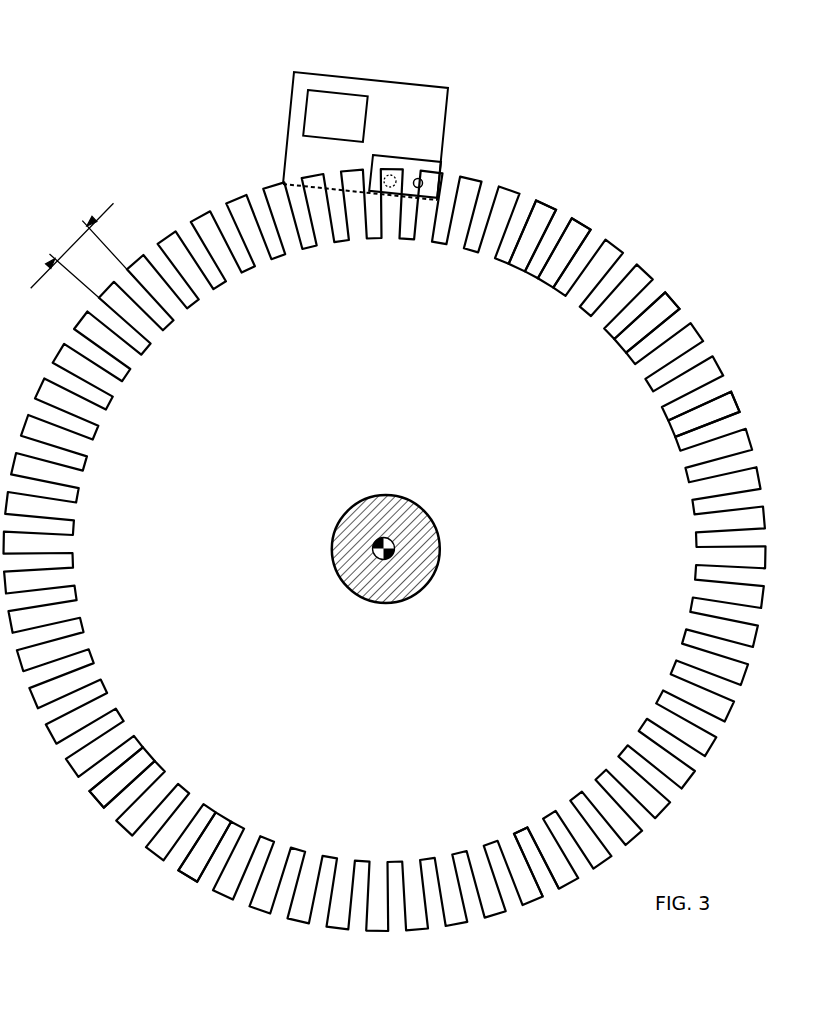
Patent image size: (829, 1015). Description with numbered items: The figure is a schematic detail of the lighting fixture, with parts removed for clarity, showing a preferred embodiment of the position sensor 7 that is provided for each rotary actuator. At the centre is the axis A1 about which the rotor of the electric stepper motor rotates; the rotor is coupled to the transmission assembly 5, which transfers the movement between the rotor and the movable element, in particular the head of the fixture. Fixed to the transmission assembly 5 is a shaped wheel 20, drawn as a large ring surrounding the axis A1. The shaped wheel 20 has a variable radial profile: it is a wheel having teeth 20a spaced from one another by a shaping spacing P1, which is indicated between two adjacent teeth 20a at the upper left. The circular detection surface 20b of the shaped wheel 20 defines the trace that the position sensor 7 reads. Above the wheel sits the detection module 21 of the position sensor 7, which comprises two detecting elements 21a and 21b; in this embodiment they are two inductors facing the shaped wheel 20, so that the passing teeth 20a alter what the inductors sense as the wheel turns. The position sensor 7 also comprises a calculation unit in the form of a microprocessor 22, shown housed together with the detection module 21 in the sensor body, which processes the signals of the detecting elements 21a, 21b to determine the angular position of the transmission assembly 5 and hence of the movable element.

The transmission assembly 5 is at (408, 573).
The position sensor 7 is at (422, 97).
The shaped wheel 20 is at (440, 815).
The teeth 20a is at (545, 210).
The circular detection surface 20b is at (563, 912).
The detection module 21 is at (412, 160).
The detecting element 21a is at (390, 188).
The detecting element 21b is at (420, 190).
The microprocessor 22 is at (328, 107).
The axis A1 is at (384, 548).
The shaping spacing P1 is at (70, 243).